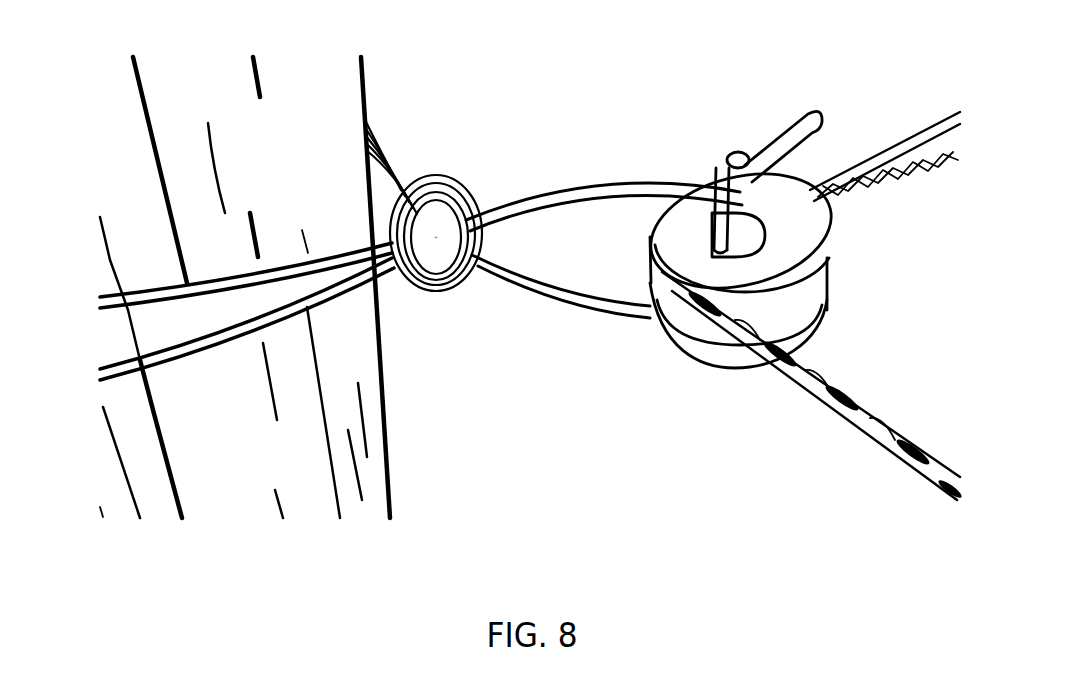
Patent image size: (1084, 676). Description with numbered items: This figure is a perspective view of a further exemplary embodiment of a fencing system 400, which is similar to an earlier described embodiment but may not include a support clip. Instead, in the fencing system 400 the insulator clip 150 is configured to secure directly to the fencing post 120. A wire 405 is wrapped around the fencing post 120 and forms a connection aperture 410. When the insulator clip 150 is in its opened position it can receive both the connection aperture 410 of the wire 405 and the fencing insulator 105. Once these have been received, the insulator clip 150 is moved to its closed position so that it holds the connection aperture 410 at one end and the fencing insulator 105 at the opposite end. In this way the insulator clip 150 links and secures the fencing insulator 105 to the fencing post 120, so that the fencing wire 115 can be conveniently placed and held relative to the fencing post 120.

The fencing insulator 105 is at (800, 243).
The fencing wire 115 is at (812, 392).
The fencing post 120 is at (137, 153).
The insulator clip 150 is at (543, 297).
The fencing system 400 is at (610, 90).
The wire 405 is at (448, 176).
The connection aperture 410 is at (432, 250).